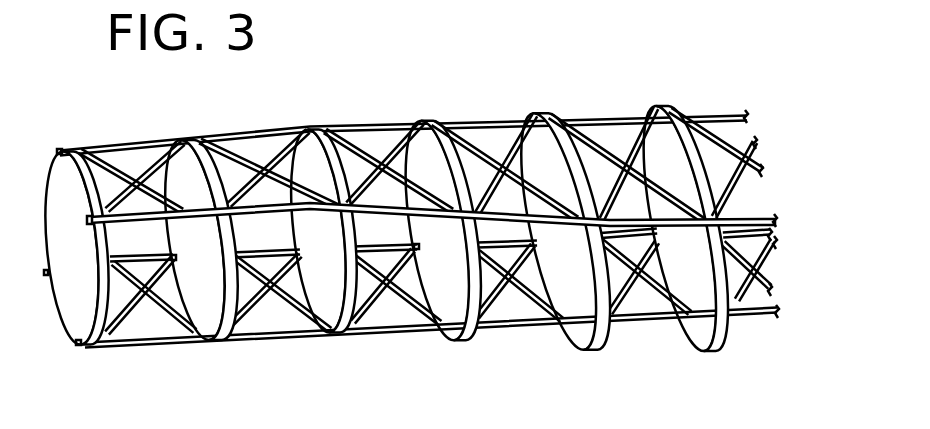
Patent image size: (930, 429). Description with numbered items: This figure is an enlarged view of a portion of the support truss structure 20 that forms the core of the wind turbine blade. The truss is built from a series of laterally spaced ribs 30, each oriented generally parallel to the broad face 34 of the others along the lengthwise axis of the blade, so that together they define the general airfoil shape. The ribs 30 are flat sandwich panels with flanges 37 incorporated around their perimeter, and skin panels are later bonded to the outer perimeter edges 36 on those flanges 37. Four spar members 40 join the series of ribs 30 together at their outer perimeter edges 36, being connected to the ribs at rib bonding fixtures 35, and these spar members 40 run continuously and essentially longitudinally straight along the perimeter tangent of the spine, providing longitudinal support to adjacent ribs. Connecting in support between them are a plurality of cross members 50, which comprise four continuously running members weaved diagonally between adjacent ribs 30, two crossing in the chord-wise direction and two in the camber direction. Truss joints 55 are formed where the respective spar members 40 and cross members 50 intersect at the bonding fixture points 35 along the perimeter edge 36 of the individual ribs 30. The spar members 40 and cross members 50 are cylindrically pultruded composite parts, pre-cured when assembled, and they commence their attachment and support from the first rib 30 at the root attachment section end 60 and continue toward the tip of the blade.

The support truss structure 20 is at (526, 76).
The rib 30 is at (56, 166).
The broad face 34 is at (583, 344).
The rib bonding fixture 35 is at (313, 125).
The outer perimeter edge 36 is at (659, 103).
The flange 37 is at (688, 114).
The spar member 40 is at (230, 133).
The cross member 50 is at (112, 166).
The truss joint 55 is at (430, 118).
The root attachment section end 60 is at (130, 372).